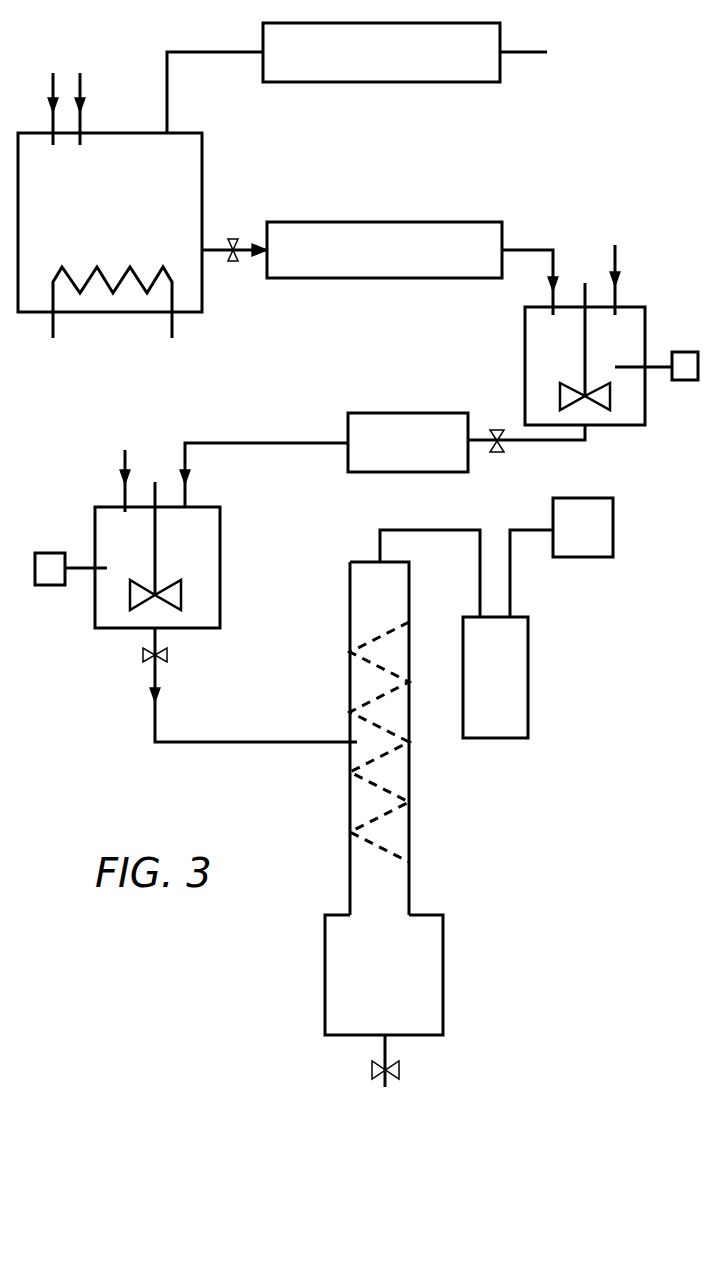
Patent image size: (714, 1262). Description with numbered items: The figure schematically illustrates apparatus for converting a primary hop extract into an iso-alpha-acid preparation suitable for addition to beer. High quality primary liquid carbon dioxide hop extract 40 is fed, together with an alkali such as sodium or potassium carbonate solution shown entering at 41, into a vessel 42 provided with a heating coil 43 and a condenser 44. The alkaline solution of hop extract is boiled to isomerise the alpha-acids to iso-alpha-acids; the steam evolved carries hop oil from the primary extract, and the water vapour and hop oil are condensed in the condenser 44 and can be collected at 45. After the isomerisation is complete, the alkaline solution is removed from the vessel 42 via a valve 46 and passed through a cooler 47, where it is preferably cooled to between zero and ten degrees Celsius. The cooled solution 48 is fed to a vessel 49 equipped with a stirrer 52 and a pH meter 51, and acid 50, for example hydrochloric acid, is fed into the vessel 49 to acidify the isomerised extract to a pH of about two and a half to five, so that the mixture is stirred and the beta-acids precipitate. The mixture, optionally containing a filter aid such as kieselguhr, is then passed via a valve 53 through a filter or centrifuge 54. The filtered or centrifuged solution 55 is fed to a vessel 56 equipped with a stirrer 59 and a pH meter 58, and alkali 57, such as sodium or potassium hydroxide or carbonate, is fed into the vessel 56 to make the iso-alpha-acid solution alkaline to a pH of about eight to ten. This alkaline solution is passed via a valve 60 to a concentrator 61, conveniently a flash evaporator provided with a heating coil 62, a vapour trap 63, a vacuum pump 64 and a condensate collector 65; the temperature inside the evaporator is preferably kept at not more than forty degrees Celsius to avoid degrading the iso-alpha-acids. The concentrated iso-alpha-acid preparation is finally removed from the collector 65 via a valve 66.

The primary liquid CO2 hop extract 40 is at (50, 115).
The second feed inlet line 41 is at (82, 113).
The vessel 42 is at (119, 234).
The heating coil 43 is at (115, 292).
The condenser 44 is at (333, 78).
The collection point for condensed water vapour and hop oil 45 is at (548, 52).
The valve 46 is at (233, 240).
The cooler 47 is at (384, 250).
The cooled solution 48 is at (527, 247).
The vessel 49 is at (525, 344).
The acid 50 is at (617, 255).
The pH meter 51 is at (685, 381).
The stirrer 52 is at (585, 283).
The valve 53 is at (497, 430).
The filter or centrifuge 54 is at (408, 442).
The filtered or centrifuged solution 55 is at (211, 443).
The vessel 56 is at (220, 566).
The alkali 57 is at (123, 462).
The pH meter 58 is at (52, 553).
The stirrer 59 is at (155, 482).
The valve 60 is at (168, 654).
The concentrator 61 is at (350, 688).
The heating coil 62 is at (364, 645).
The vapour trap 63 is at (495, 677).
The vacuum pump 64 is at (561, 557).
The condensate collector 65 is at (384, 975).
The valve 66 is at (372, 1070).